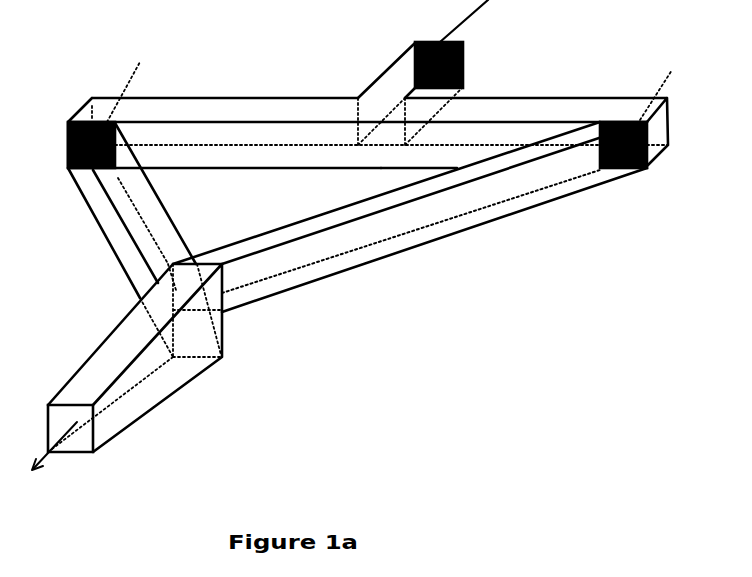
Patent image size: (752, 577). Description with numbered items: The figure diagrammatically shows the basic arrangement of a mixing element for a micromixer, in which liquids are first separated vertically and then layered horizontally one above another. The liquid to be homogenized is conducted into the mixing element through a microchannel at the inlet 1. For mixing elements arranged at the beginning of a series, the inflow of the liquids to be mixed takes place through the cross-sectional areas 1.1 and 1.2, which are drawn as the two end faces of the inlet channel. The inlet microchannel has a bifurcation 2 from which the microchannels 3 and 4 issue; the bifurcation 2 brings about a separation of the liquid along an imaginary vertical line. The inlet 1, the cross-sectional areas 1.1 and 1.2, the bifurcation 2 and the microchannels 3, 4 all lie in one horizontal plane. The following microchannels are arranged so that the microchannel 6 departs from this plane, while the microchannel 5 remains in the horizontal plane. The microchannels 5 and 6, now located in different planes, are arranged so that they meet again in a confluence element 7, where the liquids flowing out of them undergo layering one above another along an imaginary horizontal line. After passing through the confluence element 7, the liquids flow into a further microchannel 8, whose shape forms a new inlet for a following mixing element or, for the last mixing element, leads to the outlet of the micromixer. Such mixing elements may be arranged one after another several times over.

The inlet 1 is at (463, 50).
The cross-sectional area 1.1 is at (68, 170).
The cross-sectional area 1.2 is at (625, 168).
The bifurcation 2 is at (383, 117).
The microchannel 3 is at (258, 110).
The microchannel 4 is at (578, 110).
The microchannel 5 is at (468, 173).
The microchannel 6 is at (122, 190).
The confluence element 7 is at (217, 327).
The microchannel 8 is at (67, 438).